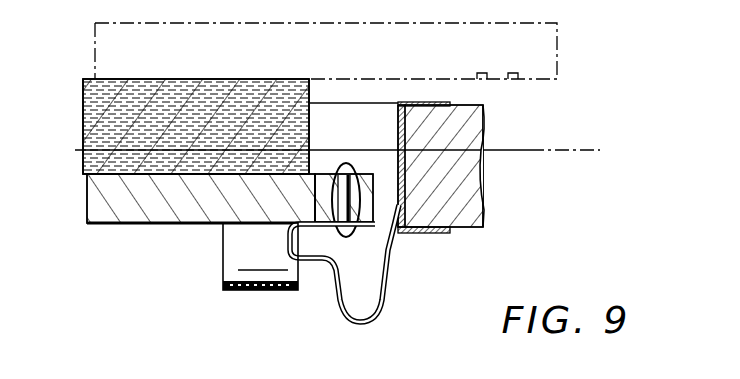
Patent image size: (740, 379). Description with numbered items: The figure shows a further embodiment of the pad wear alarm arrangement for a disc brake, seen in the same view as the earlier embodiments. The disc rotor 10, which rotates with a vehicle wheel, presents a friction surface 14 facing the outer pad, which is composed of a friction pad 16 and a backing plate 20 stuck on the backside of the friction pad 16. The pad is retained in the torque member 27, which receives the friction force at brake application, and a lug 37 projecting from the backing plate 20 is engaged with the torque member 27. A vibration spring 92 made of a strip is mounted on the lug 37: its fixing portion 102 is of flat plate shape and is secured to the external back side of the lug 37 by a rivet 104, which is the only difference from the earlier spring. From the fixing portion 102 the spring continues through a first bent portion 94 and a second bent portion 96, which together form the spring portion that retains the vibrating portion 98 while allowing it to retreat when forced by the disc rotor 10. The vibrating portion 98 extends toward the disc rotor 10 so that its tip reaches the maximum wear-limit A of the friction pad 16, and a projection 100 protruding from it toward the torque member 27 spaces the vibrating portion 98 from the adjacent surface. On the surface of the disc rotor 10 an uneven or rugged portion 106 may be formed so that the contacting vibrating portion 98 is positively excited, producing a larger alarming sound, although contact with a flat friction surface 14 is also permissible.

The disc rotor 10 is at (556, 36).
The friction surface 14 is at (440, 79).
The friction pad 16 is at (160, 96).
The backing plate 20 is at (125, 204).
The torque member 27 is at (484, 212).
The lug 37 is at (331, 172).
The vibration spring 92 is at (329, 308).
The first bent portion 94 is at (292, 244).
The second bent portion 96 is at (364, 322).
The vibrating portion 98 is at (371, 220).
The projection 100 is at (393, 255).
The fixing portion 102 is at (322, 238).
The rivet 104 is at (350, 160).
The rugged portion 106 is at (488, 97).
The maximum wear-limit A is at (563, 152).